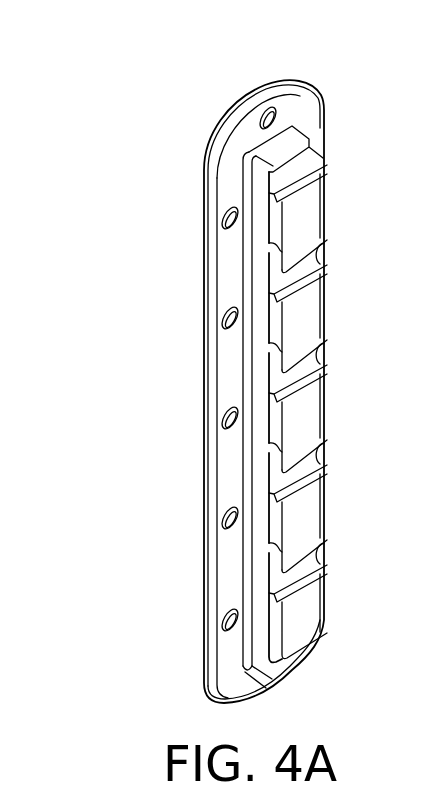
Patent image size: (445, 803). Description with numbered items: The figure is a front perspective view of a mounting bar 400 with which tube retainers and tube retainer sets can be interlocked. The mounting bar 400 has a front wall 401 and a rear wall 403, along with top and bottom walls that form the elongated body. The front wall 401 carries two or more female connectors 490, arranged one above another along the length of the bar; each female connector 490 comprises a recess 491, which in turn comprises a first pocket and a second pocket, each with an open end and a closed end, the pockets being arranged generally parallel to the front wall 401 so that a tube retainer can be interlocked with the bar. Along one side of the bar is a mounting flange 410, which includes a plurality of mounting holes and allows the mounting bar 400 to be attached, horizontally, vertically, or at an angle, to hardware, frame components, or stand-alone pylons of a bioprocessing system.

The mounting bar 400 is at (178, 108).
The front wall 401 is at (318, 502).
The rear wall 403 is at (205, 455).
The mounting flange 410 is at (235, 689).
The female connector 490 is at (305, 255).
The recess 491 is at (278, 272).